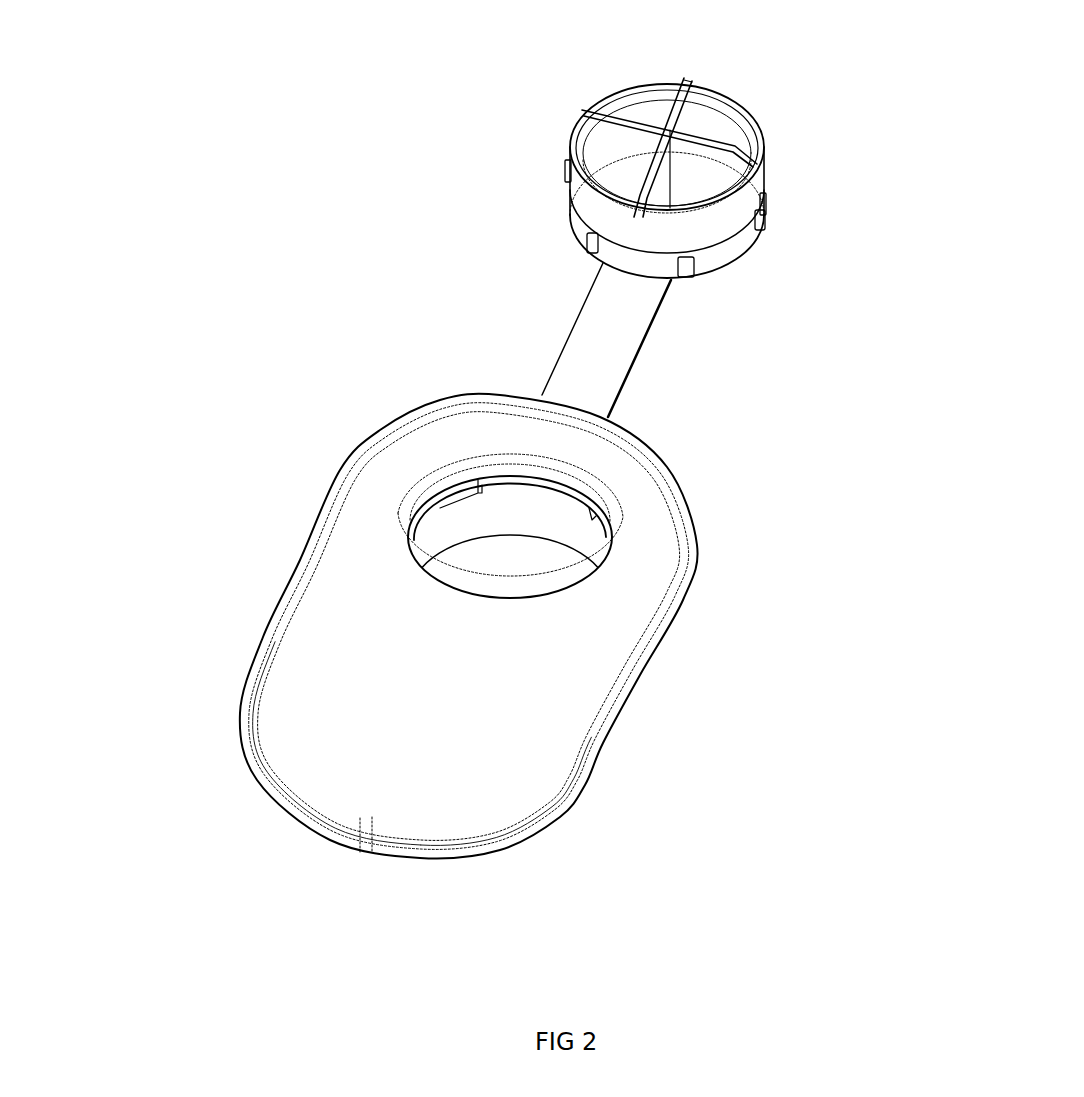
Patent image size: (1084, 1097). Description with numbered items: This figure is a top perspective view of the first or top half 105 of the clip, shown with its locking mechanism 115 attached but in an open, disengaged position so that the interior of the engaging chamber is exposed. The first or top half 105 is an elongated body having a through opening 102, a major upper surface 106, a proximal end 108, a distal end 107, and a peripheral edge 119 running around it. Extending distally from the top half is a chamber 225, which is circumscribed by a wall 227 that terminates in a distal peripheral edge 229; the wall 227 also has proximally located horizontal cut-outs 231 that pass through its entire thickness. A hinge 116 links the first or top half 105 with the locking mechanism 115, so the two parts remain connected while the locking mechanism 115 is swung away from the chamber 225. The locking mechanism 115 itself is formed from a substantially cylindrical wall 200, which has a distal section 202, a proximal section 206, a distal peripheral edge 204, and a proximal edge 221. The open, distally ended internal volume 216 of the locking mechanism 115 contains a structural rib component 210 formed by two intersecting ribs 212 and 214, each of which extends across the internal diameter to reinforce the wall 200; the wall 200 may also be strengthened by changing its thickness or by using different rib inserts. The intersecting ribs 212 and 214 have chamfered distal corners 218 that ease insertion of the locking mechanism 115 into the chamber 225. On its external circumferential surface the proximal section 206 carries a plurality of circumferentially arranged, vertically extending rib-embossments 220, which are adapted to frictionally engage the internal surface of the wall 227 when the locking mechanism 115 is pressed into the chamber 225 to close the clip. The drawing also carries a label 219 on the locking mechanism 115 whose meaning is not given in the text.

The through opening 102 is at (405, 490).
The first or top half 105 is at (638, 710).
The major upper surface 106 is at (295, 703).
The distal end 107 is at (288, 820).
The proximal end 108 is at (642, 432).
The locking mechanism 115 is at (792, 152).
The hinge 116 is at (573, 322).
The peripheral edge 119 is at (582, 795).
The cylindrical wall 200 is at (745, 203).
The distal section 202 is at (572, 193).
The distal peripheral edge 204 is at (763, 192).
The proximal section 206 is at (573, 217).
The structural rib component 210 is at (647, 153).
The rib 212 is at (667, 110).
The rib 214 is at (615, 118).
The internal volume 216 is at (725, 125).
The chamfered distal corners 218 is at (700, 85).
The inner wall 219 is at (715, 202).
The rib-embossments 220 is at (585, 250).
The proximal edge 221 is at (657, 87).
The chamber 225 is at (488, 570).
The wall 227 is at (553, 518).
The distal peripheral edge 229 is at (493, 533).
The horizontal cut-outs 231 is at (443, 508).